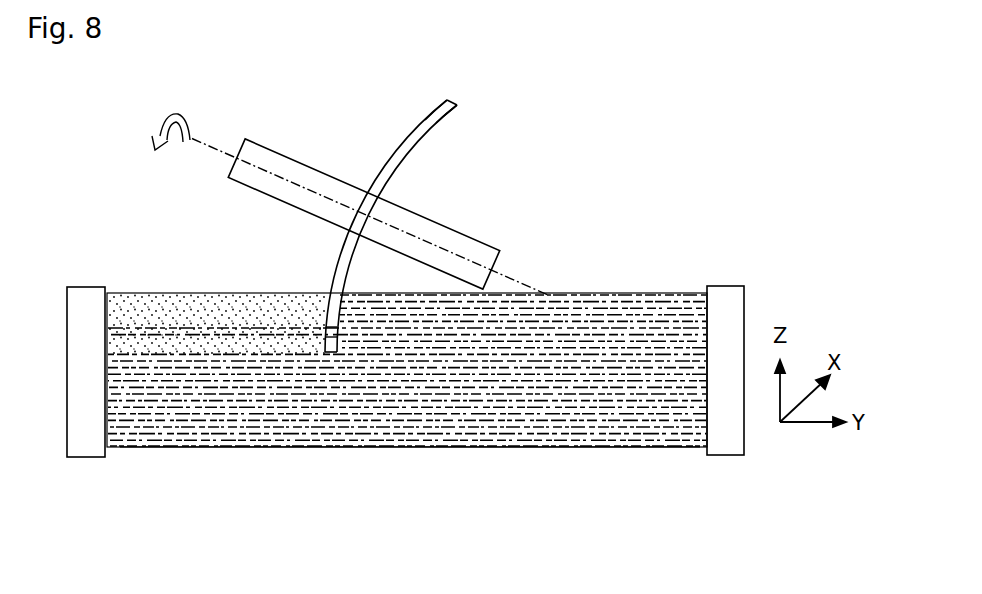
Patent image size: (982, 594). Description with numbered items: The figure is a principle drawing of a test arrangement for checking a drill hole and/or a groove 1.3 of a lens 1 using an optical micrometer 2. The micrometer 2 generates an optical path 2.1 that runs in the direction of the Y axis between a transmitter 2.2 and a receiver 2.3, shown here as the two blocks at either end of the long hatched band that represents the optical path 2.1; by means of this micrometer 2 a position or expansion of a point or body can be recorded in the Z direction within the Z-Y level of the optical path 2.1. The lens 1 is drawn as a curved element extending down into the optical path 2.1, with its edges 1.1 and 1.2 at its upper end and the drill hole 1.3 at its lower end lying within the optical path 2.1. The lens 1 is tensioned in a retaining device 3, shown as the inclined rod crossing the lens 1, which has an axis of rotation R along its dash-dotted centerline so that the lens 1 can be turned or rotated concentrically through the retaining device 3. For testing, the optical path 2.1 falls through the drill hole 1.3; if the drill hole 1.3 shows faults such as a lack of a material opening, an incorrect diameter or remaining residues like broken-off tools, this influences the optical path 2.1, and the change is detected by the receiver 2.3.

The lens 1 is at (402, 155).
The edge 1.1 is at (458, 105).
The edge 1.2 is at (445, 99).
The drill hole 1.3 is at (343, 328).
The optical micrometer 2 is at (648, 466).
The optical path 2.1 is at (575, 413).
The transmitter 2.2 is at (726, 427).
The receiver 2.3 is at (83, 433).
The retaining device 3 is at (293, 174).
The axis of rotation R is at (188, 117).